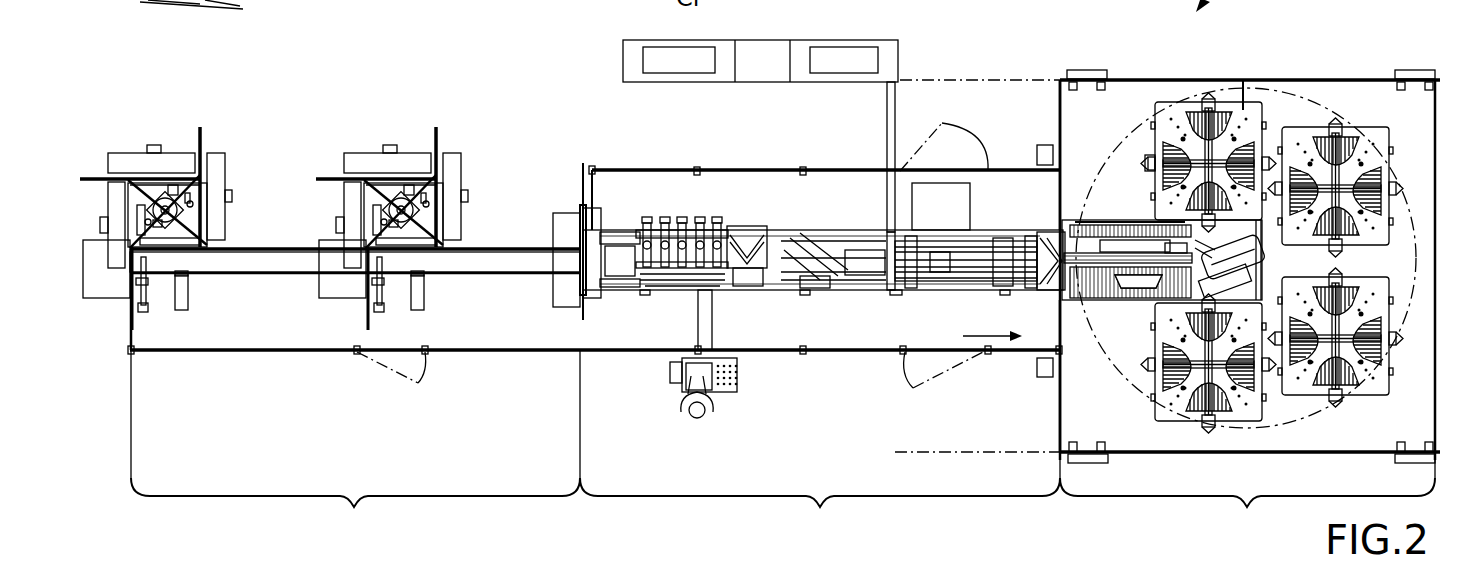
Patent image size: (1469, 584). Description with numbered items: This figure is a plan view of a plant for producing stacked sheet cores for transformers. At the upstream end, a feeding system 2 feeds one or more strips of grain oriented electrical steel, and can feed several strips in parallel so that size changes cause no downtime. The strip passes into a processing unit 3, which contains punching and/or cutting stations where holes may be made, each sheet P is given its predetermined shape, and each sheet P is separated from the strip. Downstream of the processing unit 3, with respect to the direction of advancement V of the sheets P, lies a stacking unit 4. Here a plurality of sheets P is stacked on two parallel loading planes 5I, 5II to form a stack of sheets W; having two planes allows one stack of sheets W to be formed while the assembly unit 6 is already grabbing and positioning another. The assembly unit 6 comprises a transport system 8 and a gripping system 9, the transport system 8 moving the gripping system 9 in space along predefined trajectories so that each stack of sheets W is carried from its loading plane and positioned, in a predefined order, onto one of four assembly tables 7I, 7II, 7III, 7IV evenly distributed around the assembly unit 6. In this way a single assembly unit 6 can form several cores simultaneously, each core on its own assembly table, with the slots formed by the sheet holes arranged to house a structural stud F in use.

The feeding system 2 is at (331, 329).
The processing unit 3 is at (822, 286).
The stacking unit 4 is at (1167, 266).
The loading plane 5I is at (1082, 300).
The loading plane 5II is at (1092, 232).
The assembly unit 6 is at (1125, 206).
The assembly table 7I is at (1160, 105).
The assembly table 7II is at (1373, 130).
The assembly table 7III is at (1385, 303).
The assembly table 7IV is at (1258, 414).
The transport system 8 is at (1243, 100).
The gripping system 9 is at (1128, 210).
The structural stud F is at (312, 0).
The sheet P is at (393, 0).
The stack of sheets W is at (1175, 288).
The direction of advancement V is at (992, 325).